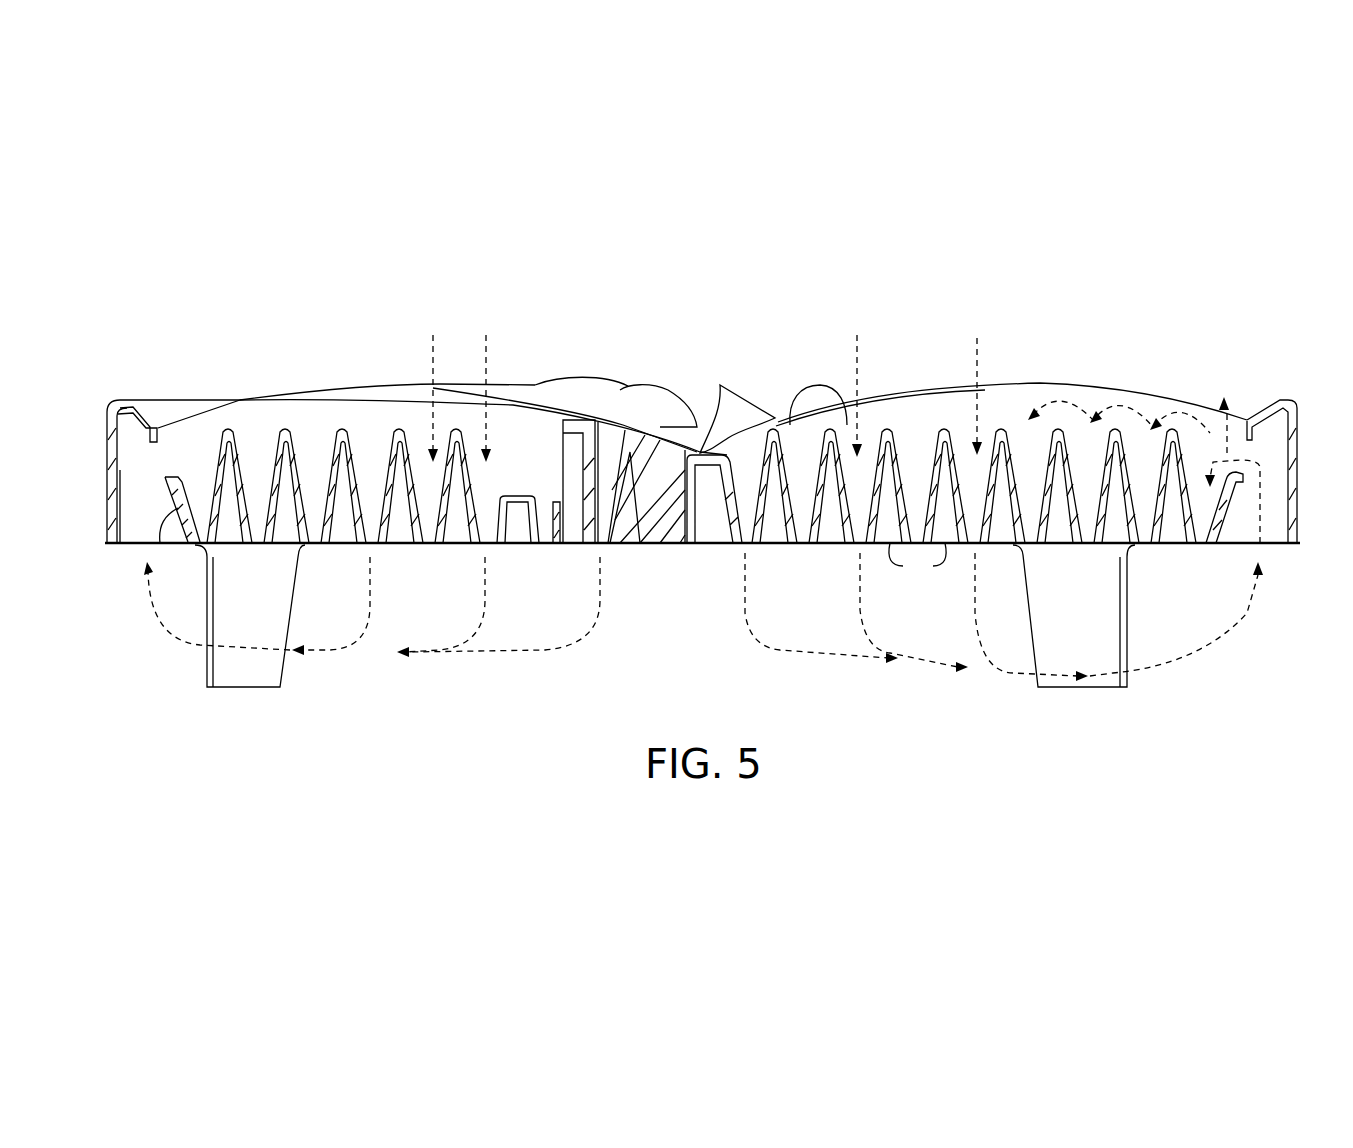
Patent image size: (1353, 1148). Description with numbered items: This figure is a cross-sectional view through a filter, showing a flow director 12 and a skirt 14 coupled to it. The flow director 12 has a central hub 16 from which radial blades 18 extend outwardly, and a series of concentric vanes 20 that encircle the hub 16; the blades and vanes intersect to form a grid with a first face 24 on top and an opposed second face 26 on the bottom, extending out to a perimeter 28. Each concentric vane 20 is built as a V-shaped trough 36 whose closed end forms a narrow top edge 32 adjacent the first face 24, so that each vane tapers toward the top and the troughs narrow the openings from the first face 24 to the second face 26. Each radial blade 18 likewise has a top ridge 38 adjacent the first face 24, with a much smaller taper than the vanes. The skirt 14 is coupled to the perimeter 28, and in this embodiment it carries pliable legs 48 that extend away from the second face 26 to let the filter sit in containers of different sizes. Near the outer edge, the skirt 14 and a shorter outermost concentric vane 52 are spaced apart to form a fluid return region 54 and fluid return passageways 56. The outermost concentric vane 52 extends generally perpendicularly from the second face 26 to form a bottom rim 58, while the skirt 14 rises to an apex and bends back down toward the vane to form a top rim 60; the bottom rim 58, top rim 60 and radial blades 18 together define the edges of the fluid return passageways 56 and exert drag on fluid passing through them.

The flow director 12 is at (530, 372).
The skirt 14 is at (100, 490).
The hub 16 is at (700, 455).
The radial blade 18 is at (1040, 372).
The concentric vane 20 is at (795, 452).
The first face 24 is at (655, 397).
The second face 26 is at (655, 555).
The perimeter 28 is at (1237, 477).
The top edge 32 is at (950, 428).
The V-shaped trough 36 is at (917, 568).
The top ridge 38 is at (1107, 388).
The leg 48 is at (243, 680).
The outermost concentric vane 52 is at (160, 543).
The fluid return region 54 is at (140, 508).
The fluid return passageway 56 is at (165, 475).
The bottom rim 58 is at (160, 462).
The top rim 60 is at (160, 427).